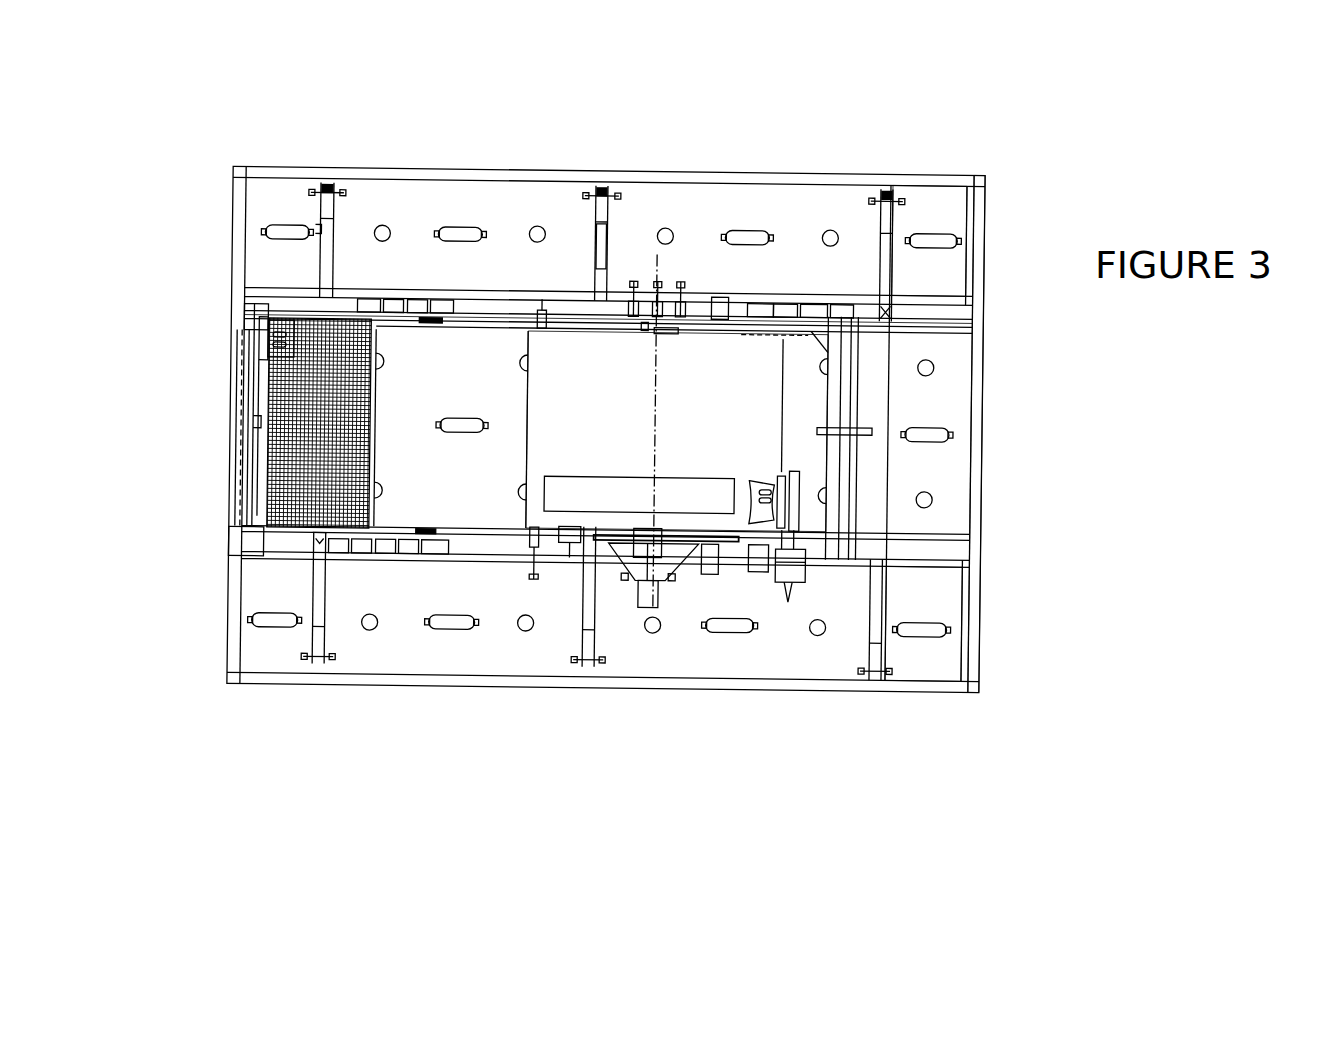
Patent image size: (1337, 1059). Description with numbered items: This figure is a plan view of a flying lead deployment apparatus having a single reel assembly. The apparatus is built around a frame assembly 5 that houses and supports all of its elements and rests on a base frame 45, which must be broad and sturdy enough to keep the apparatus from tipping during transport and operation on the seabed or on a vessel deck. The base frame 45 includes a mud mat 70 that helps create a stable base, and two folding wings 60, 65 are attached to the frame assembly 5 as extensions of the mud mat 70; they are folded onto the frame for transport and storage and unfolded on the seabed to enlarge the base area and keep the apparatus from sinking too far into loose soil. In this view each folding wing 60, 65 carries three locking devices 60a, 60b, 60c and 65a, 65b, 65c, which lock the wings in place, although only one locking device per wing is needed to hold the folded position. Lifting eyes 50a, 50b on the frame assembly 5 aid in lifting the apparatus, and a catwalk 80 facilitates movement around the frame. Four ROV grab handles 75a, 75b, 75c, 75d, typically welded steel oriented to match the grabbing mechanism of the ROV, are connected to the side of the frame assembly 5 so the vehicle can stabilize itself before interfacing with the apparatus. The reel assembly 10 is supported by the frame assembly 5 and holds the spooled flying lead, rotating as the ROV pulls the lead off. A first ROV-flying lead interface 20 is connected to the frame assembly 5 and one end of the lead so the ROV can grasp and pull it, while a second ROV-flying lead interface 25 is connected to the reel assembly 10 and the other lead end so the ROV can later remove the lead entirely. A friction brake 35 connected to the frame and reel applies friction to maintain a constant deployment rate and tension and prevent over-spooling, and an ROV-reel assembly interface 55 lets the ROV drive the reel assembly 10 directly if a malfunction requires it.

The frame assembly 5 is at (588, 278).
The reel assembly 10 is at (751, 356).
The first ROV-flying lead interface 20 is at (263, 345).
The second ROV-flying lead interface 25 is at (786, 502).
The friction brake 35 is at (573, 557).
The base frame 45 is at (995, 219).
The lifting eye 50a is at (542, 318).
The lifting eye 50b is at (535, 555).
The ROV-reel assembly interface 55 is at (653, 610).
The folding wing 60 is at (934, 205).
The locking device 60a is at (323, 300).
The locking device 60b is at (601, 312).
The locking device 60c is at (890, 320).
The folding wing 65 is at (933, 658).
The locking device 65a is at (313, 662).
The locking device 65b is at (601, 555).
The locking device 65c is at (878, 675).
The mud mat 70 is at (407, 557).
The ROV grab handle 75a is at (410, 298).
The ROV grab handle 75b is at (797, 298).
The ROV grab handle 75c is at (791, 587).
The ROV grab handle 75d is at (423, 553).
The catwalk 80 is at (292, 450).